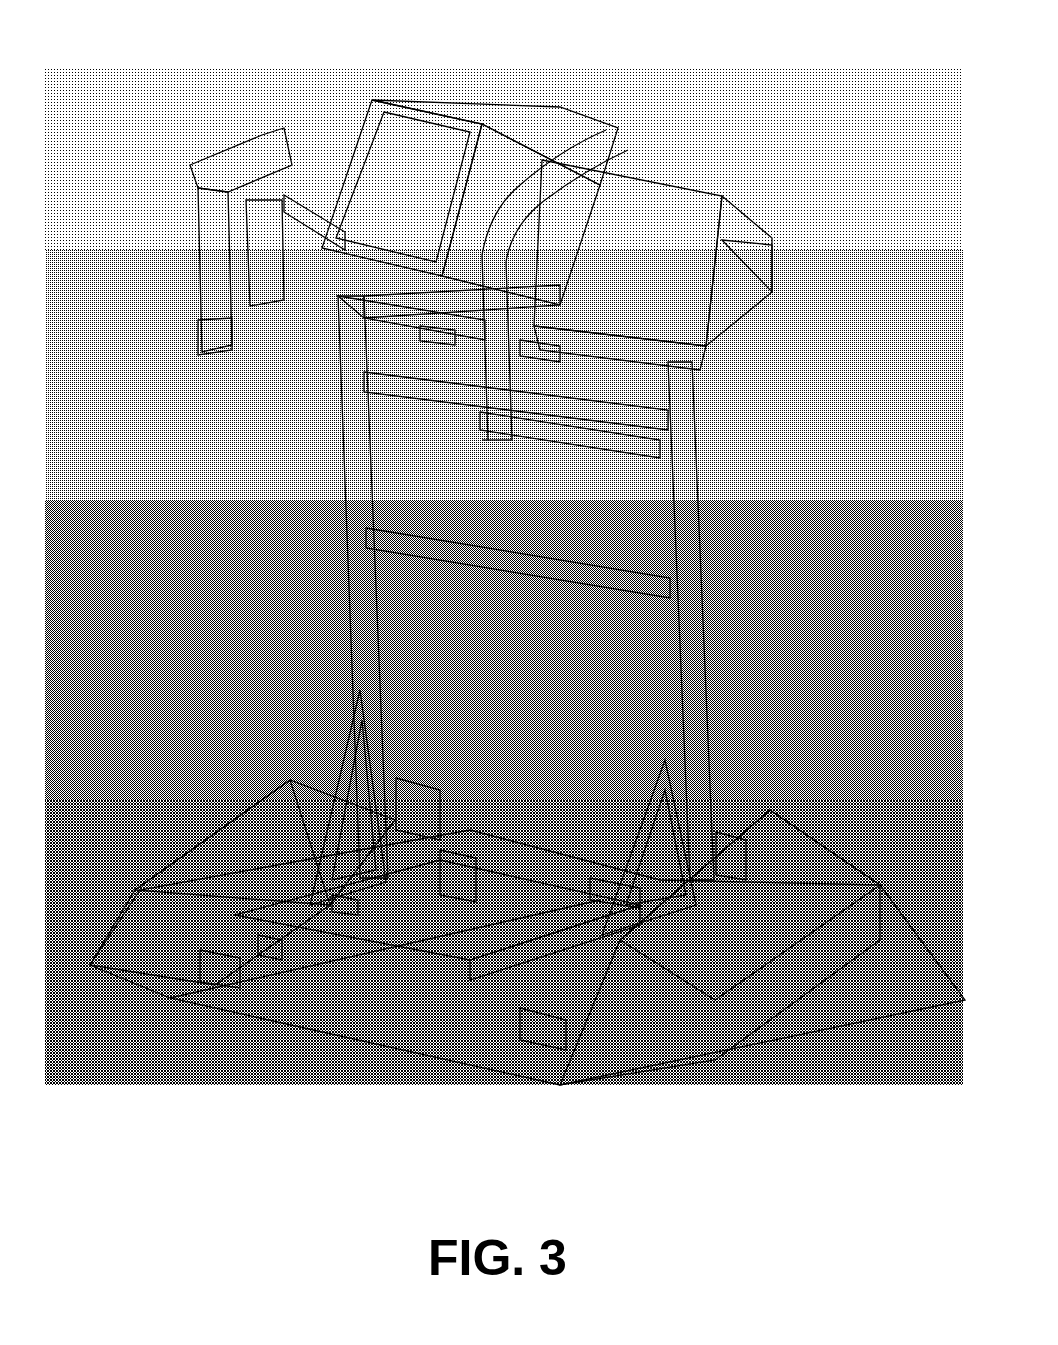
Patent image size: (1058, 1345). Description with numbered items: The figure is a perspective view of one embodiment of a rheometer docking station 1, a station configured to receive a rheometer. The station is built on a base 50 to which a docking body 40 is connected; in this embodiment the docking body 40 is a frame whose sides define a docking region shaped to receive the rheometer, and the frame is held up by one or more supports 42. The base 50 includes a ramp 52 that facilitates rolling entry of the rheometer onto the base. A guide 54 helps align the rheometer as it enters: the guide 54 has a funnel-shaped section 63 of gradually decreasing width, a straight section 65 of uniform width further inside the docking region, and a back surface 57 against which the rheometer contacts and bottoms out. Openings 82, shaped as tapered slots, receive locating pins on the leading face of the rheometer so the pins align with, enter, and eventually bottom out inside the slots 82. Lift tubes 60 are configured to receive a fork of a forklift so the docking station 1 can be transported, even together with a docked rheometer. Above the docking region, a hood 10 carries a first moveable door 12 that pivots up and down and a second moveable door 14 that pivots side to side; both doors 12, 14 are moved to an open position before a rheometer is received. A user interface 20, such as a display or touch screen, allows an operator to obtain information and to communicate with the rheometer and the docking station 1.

The rheometer docking station 1 is at (825, 115).
The hood 10 is at (600, 130).
The first moveable door 12 is at (360, 110).
The second moveable door 14 is at (200, 160).
The user interface 20 is at (660, 190).
The docking body 40 is at (345, 460).
The supports 42 is at (340, 750).
The base 50 is at (435, 1000).
The ramp 52 is at (310, 1030).
The guide 54 is at (235, 960).
The back surface 57 is at (440, 865).
The lift tubes 60 is at (120, 960).
The funnel-shaped section 63 is at (270, 945).
The straight section 65 is at (345, 905).
The openings 82 is at (430, 335).